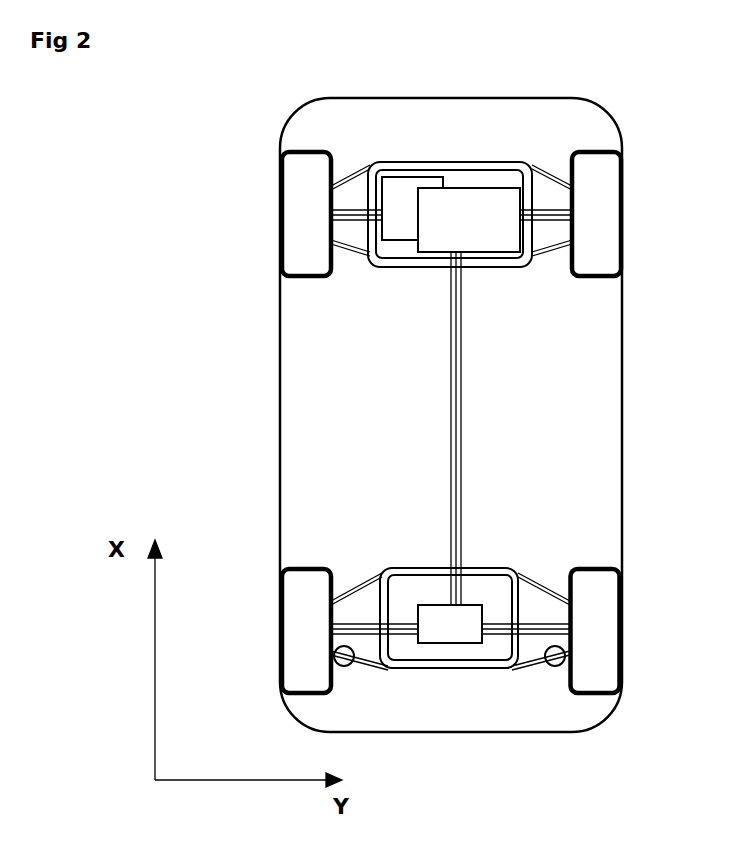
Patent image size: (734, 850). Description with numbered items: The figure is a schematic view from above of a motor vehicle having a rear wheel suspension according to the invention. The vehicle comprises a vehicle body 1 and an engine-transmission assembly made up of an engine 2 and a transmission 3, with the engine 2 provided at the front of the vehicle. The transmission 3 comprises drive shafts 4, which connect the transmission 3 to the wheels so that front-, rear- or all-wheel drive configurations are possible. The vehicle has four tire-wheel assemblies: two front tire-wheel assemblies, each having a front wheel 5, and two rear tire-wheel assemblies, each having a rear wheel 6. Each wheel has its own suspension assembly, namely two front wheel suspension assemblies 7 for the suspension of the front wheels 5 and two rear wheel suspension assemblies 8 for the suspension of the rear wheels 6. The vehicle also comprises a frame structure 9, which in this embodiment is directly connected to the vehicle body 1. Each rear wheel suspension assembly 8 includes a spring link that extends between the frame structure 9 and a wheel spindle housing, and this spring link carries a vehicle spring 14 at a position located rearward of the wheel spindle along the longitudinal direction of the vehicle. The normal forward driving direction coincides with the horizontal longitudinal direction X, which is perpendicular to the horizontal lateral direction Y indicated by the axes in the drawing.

The vehicle body 1 is at (280, 378).
The engine 2 is at (465, 213).
The transmission 3 is at (397, 190).
The drive shafts 4 is at (331, 220).
The front wheel 5 is at (302, 186).
The rear wheel 6 is at (296, 622).
The front wheel suspension assembly 7 is at (354, 182).
The rear wheel suspension assembly 8 is at (358, 608).
The frame structure 9 is at (413, 570).
The vehicle spring 14 is at (346, 664).